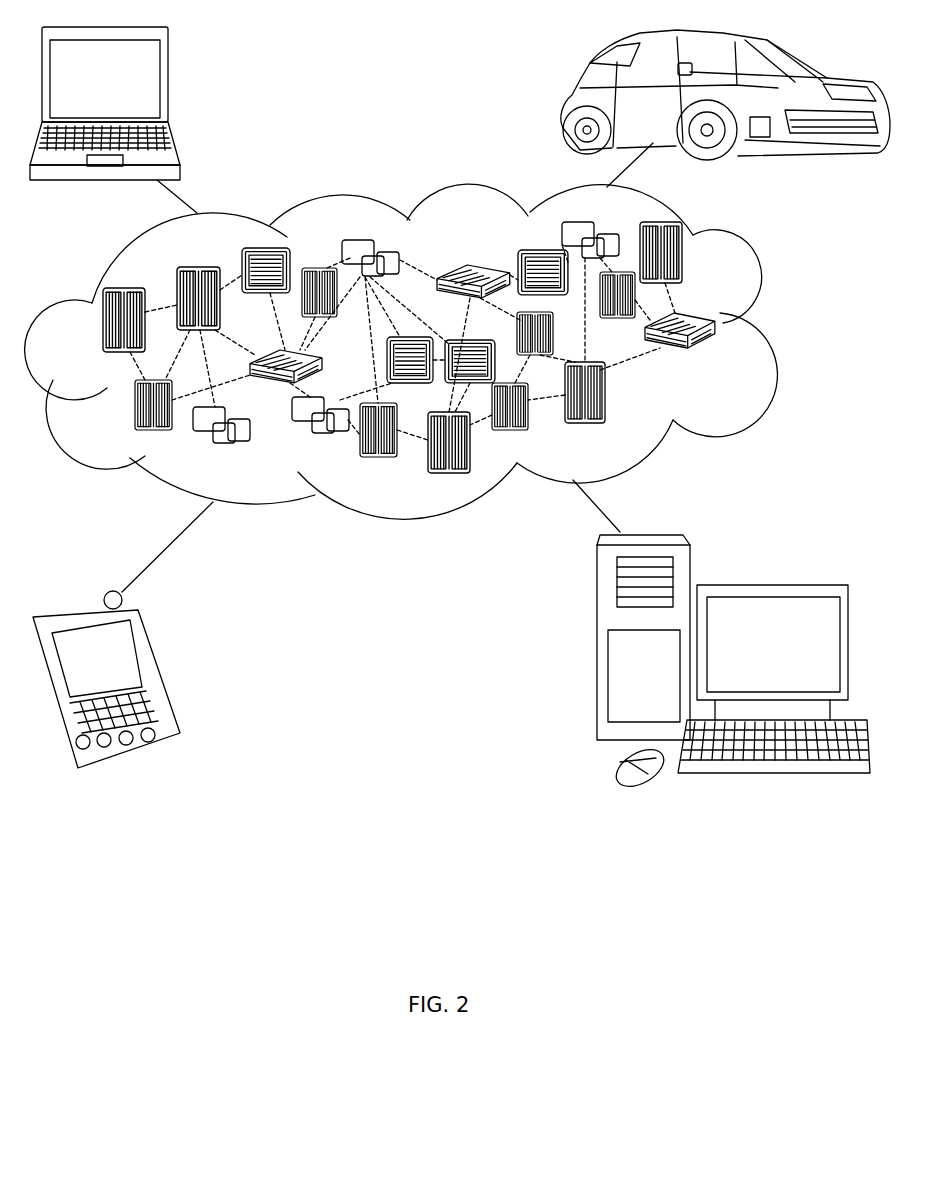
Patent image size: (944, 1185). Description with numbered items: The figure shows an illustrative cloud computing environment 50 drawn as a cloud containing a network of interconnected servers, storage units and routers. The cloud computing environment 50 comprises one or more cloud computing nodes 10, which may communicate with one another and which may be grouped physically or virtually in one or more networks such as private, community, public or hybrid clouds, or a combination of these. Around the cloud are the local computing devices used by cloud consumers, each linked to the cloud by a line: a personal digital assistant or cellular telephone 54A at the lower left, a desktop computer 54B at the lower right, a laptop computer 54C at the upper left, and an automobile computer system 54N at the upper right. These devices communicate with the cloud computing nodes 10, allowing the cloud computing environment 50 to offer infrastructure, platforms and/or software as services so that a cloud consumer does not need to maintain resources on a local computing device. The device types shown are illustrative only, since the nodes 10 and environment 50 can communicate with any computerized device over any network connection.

The laptop computer 54C is at (168, 82).
The automobile computer system 54N is at (567, 100).
The personal digital assistant or cellular telephone 54A is at (157, 670).
The desktop computer 54B is at (772, 582).
The cloud computing environment 50 is at (773, 327).
The cloud computing node 10 is at (733, 361).